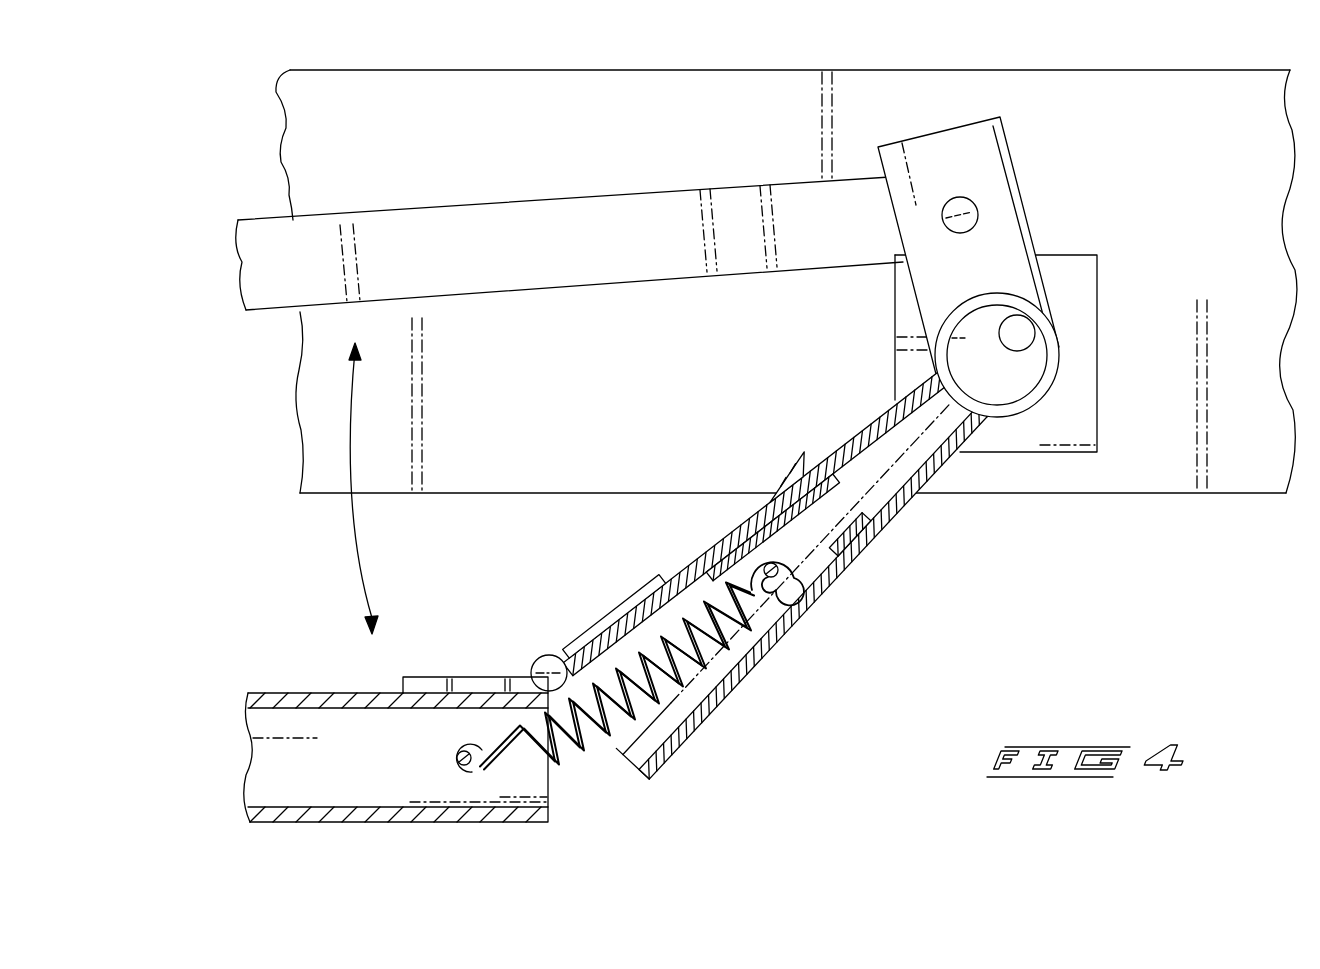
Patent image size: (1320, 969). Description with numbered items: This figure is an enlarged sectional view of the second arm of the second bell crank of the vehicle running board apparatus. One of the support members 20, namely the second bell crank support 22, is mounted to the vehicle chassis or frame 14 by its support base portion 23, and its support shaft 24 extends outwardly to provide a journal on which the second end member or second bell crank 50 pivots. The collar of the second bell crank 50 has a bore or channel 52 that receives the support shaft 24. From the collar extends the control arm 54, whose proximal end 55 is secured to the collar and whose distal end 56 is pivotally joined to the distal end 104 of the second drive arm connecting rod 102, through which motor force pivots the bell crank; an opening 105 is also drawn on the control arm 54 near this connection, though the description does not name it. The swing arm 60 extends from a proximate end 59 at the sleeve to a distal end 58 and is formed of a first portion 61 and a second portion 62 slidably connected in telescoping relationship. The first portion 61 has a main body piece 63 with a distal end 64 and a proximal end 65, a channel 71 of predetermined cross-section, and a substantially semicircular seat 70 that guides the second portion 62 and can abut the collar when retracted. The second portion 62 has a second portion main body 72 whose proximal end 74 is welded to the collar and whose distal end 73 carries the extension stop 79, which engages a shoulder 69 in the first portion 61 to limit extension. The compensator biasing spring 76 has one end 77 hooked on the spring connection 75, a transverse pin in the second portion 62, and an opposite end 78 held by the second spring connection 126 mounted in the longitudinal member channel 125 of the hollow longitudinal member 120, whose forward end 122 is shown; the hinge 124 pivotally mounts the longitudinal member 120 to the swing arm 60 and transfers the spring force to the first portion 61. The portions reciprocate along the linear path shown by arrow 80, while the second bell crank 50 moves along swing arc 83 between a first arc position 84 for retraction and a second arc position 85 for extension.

The chassis or frame 14 is at (1187, 135).
The support members 20 is at (1128, 228).
The second bell crank support 22 is at (1128, 346).
The support base portion 23 is at (1080, 432).
The support shaft 24 is at (1007, 405).
The second end member (second bell crank) 50 is at (1054, 382).
The bore or channel 52 is at (1022, 320).
The control arm 54 is at (990, 200).
The proximal end 55 is at (935, 305).
The distal end 56 is at (967, 155).
The distal end 58 is at (643, 795).
The proximate end 59 is at (872, 406).
The swing arm 60 is at (720, 534).
The first portion 61 is at (690, 573).
The second portion 62 is at (937, 540).
The main body piece 63 is at (800, 620).
The distal or first end 64 is at (650, 778).
The proximal end 65 is at (925, 555).
The shoulder 69 is at (775, 495).
The semicircular seat 70 is at (900, 548).
The channel 71 is at (660, 762).
The second portion main body 72 is at (873, 423).
The distal end 73 is at (703, 553).
The proximal end 74 is at (1003, 415).
The spring connection 75 is at (790, 560).
The compensator biasing spring 76 is at (572, 752).
The one end 77 is at (760, 650).
The opposite end 78 is at (487, 740).
The extension stop 79 is at (768, 555).
The arrow 80 is at (895, 600).
The swing arc 83 is at (350, 500).
The first arc position 84 is at (345, 368).
The second arc position 85 is at (368, 628).
The second drive arm connecting rod 102 is at (312, 265).
The distal end 104 is at (648, 240).
The bolt hole 105 is at (945, 228).
The longitudinal member 120 is at (395, 847).
The forward end 122 is at (320, 814).
The hinge 124 is at (546, 655).
The longitudinal member channel 125 is at (318, 775).
The second spring connection 126 is at (456, 758).